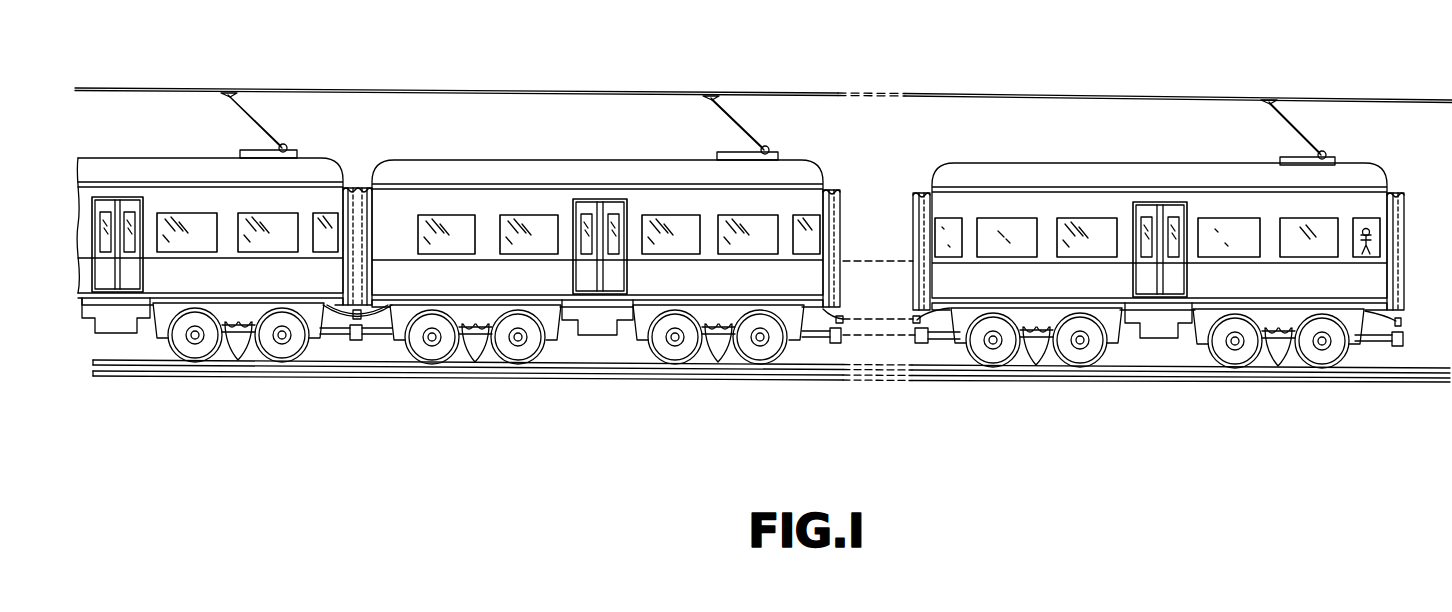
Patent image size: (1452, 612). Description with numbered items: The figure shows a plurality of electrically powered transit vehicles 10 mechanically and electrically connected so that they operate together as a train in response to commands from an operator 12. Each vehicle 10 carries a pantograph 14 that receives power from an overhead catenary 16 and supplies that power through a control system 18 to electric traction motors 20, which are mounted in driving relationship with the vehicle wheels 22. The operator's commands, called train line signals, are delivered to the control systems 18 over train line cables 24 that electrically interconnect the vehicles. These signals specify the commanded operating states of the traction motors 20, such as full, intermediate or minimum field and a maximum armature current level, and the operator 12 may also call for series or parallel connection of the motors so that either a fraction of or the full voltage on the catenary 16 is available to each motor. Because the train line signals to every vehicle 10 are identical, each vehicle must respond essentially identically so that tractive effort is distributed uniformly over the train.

The transit vehicle 10 is at (154, 157).
The operator 12 is at (1372, 233).
The pantograph 14 is at (265, 129).
The overhead catenary 16 is at (570, 88).
The control system 18 is at (115, 327).
The electric traction motor 20 is at (244, 351).
The vehicle wheel 22 is at (197, 352).
The train line cable 24 is at (359, 320).